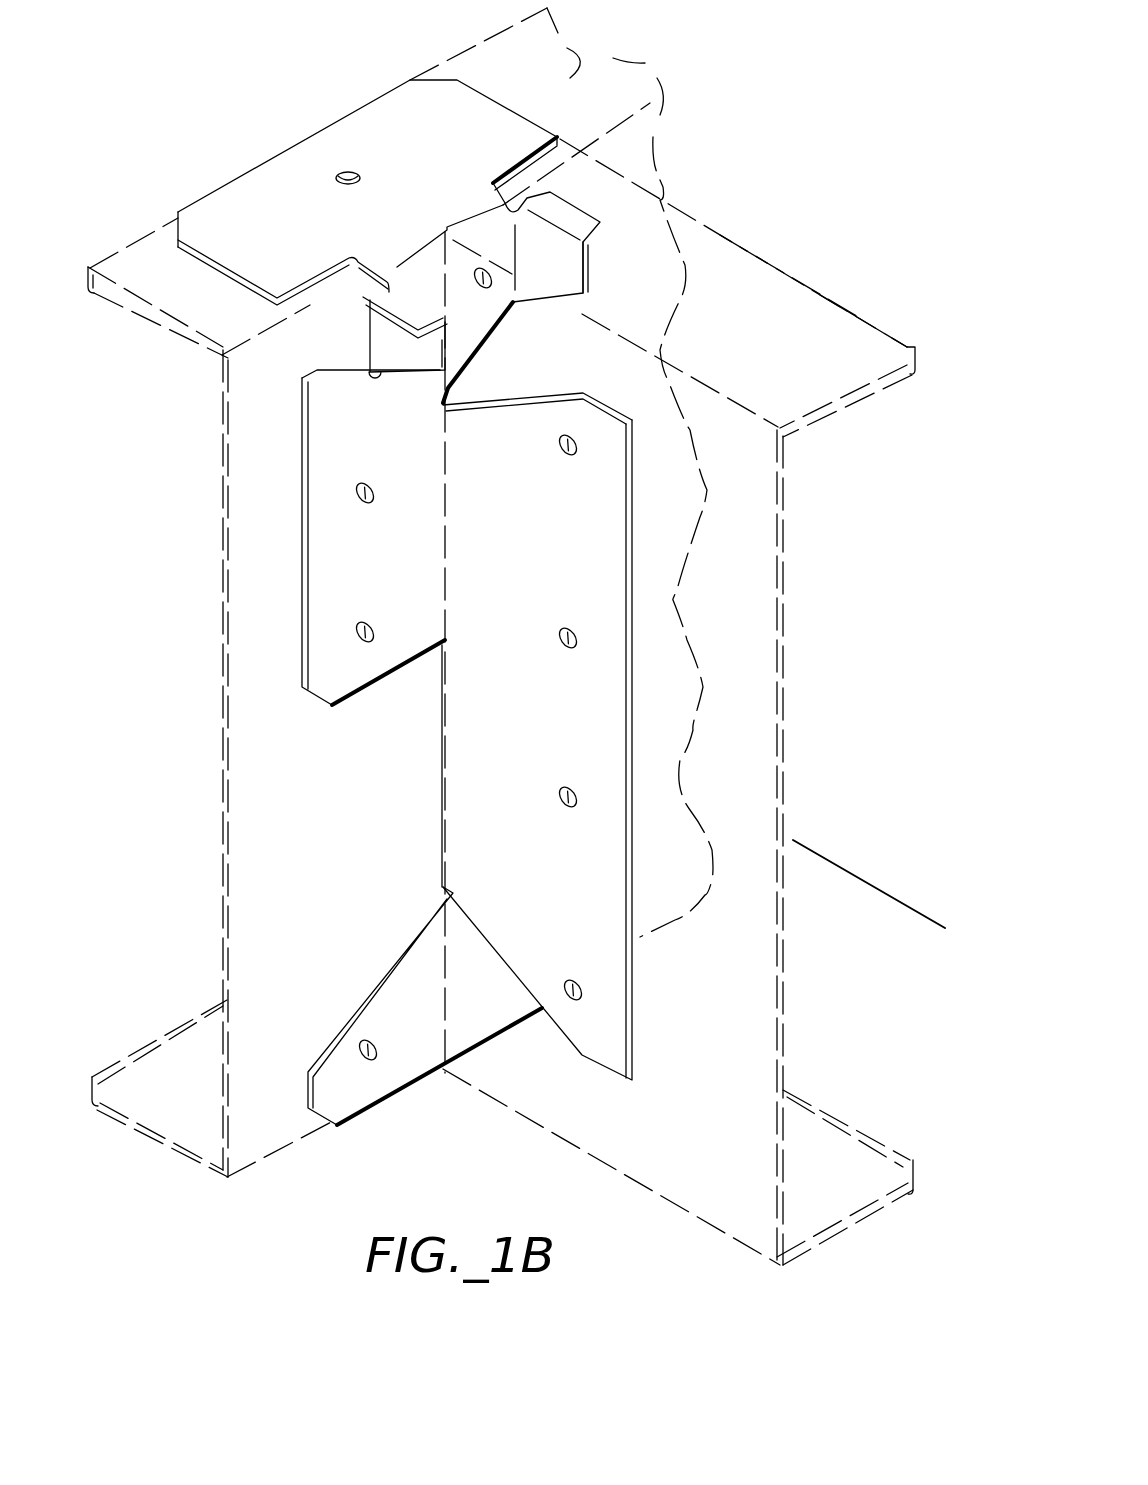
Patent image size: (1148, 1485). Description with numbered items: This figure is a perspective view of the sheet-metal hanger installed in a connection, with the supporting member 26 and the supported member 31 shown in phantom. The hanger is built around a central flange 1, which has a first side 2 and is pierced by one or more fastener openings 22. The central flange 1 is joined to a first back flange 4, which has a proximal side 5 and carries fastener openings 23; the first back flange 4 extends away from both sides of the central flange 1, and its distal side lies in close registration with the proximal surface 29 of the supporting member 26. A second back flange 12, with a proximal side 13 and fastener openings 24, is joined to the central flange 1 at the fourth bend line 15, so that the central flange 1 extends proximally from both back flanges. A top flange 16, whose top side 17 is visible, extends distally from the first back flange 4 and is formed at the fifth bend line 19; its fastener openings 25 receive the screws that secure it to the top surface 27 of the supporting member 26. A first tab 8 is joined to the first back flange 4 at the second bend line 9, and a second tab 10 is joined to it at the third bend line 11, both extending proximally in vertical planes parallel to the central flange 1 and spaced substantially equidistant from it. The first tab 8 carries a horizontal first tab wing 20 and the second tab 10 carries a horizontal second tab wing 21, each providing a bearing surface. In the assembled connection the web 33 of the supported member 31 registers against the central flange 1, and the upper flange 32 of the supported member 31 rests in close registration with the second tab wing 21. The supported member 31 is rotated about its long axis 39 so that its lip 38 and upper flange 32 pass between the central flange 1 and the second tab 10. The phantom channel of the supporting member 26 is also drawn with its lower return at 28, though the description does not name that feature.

The central flange 1 is at (555, 736).
The first side 2 is at (607, 690).
The first back flange 4 is at (402, 485).
The proximal side 5 is at (327, 517).
The first tab 8 is at (438, 347).
The second bend line 9 is at (367, 332).
The second tab 10 is at (578, 267).
The third bend line 11 is at (517, 250).
The second back flange 12 is at (414, 1009).
The proximal side 13 is at (403, 987).
The fourth bend line 15 is at (440, 762).
The top flange 16 is at (353, 176).
The top side 17 is at (397, 98).
The fifth bend line 19 is at (432, 248).
The first tab wing 20 is at (385, 323).
The second tab wing 21 is at (567, 240).
The fastener openings 22 is at (562, 450).
The fastener openings 23 is at (483, 287).
The fastener openings 24 is at (367, 1045).
The fastener openings 25 is at (347, 172).
The supporting member 26 is at (511, 636).
The top surface 27 is at (598, 38).
The bottom lip of stud 28 is at (162, 1145).
The proximal surface 29 is at (268, 773).
The supported member 31 is at (757, 293).
The upper flange 32 is at (843, 333).
The web 33 is at (783, 607).
The lip 38 is at (893, 397).
The long axis 39 is at (838, 866).